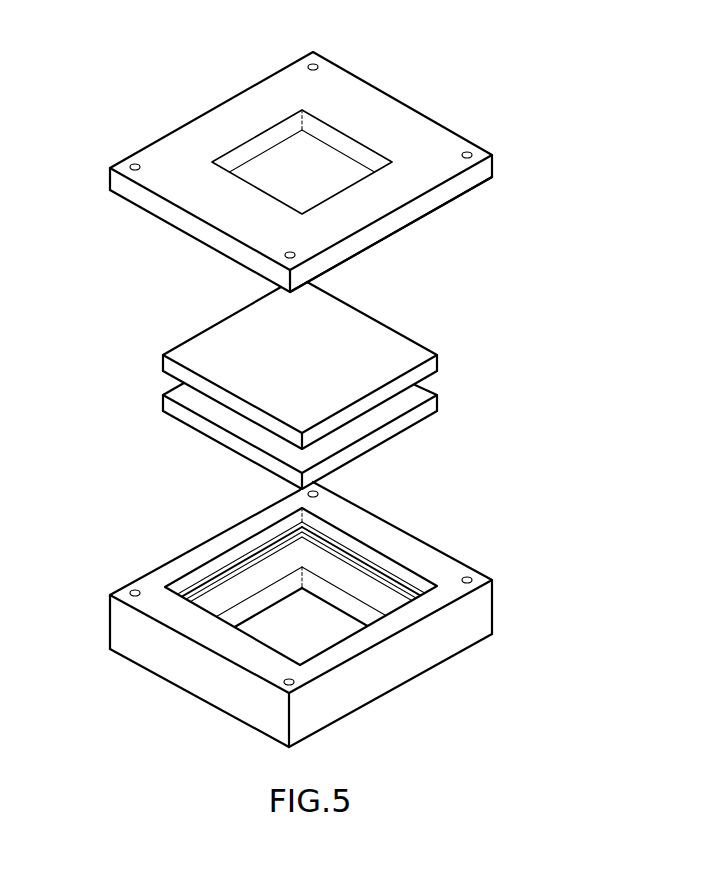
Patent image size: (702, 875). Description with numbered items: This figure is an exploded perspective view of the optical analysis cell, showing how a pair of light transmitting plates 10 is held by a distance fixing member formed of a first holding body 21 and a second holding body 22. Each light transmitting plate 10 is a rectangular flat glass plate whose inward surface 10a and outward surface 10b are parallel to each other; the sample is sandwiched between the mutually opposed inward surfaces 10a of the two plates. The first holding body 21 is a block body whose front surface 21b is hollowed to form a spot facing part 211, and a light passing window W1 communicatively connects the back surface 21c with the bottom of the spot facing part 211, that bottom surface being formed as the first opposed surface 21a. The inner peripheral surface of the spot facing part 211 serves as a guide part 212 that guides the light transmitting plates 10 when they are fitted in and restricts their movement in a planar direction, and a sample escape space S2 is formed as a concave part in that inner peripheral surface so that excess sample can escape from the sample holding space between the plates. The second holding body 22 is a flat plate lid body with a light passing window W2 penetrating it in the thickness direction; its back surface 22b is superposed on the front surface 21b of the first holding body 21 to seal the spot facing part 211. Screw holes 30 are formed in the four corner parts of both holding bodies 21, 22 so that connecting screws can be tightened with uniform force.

The screw hole 30 is at (314, 62).
The second holding body 22 is at (348, 172).
The back surface of second holding body 22b is at (410, 228).
The light passing window W2 is at (302, 170).
The light transmitting plate 10 is at (301, 385).
The inward surface 10a is at (178, 398).
The outward surface 10b is at (181, 352).
The first holding body 21 is at (348, 616).
The first opposed surface 21a is at (229, 587).
The front surface of first holding body 21b is at (412, 552).
The back surface of first holding body 21c is at (390, 693).
The spot facing part 211 is at (340, 575).
The guide part 212 is at (222, 565).
The sample escape space S2 is at (255, 555).
The light passing window W1 is at (307, 639).